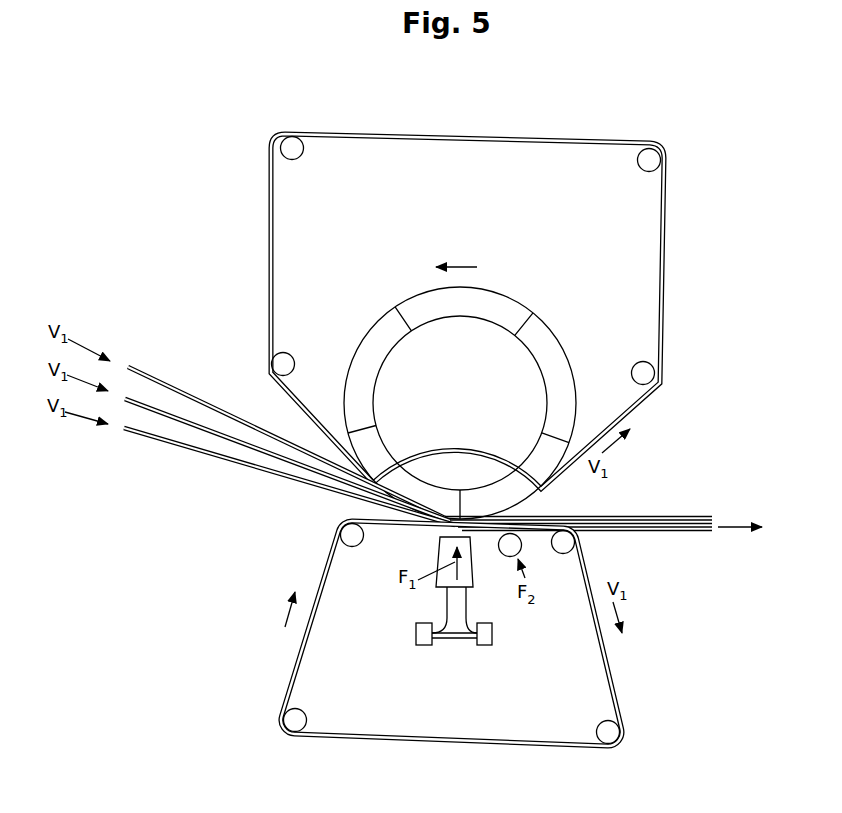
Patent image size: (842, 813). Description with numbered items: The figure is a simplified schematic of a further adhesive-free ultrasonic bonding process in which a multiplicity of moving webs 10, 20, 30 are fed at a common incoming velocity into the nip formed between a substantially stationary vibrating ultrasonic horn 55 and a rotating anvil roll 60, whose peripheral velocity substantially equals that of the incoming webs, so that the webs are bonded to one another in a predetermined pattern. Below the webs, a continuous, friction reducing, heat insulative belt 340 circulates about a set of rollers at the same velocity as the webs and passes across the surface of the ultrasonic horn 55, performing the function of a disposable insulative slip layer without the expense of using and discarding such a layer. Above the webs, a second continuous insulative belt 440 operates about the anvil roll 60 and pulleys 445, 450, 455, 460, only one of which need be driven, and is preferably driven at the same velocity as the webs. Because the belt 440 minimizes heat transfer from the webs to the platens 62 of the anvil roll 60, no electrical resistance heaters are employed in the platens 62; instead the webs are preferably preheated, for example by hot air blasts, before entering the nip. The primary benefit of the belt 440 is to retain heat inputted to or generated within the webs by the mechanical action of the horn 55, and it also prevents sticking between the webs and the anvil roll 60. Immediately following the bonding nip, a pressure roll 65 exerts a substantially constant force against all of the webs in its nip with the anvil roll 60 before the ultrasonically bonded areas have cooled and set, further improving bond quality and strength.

The moving web 10 is at (163, 382).
The moving web 20 is at (202, 427).
The moving web 30 is at (168, 443).
The vibrating ultrasonic horn 55 is at (438, 549).
The anvil roll 60 is at (480, 392).
The platens of anvil roll 62 is at (382, 322).
The pressure roll 65 is at (503, 554).
The continuous insulative belt 340 is at (613, 677).
The second continuous insulative belt 440 is at (663, 257).
The pulley 445 is at (288, 352).
The pulley 450 is at (303, 152).
The pulley 455 is at (638, 162).
The pulley 460 is at (638, 361).